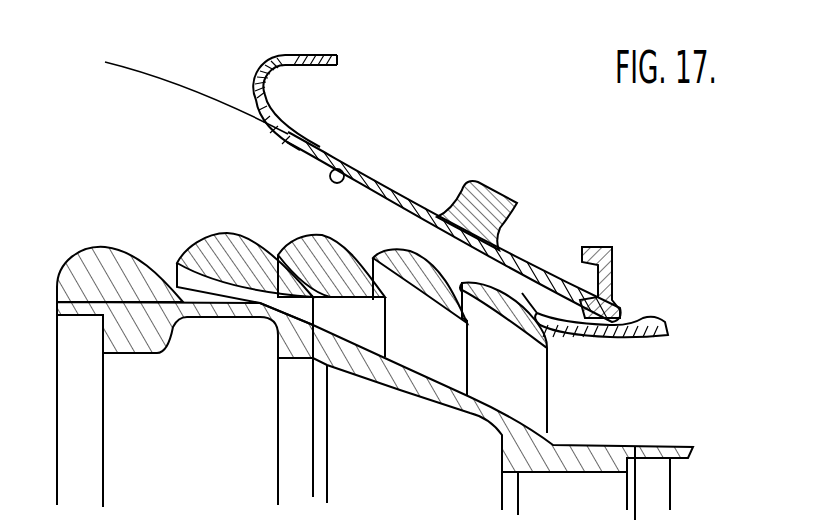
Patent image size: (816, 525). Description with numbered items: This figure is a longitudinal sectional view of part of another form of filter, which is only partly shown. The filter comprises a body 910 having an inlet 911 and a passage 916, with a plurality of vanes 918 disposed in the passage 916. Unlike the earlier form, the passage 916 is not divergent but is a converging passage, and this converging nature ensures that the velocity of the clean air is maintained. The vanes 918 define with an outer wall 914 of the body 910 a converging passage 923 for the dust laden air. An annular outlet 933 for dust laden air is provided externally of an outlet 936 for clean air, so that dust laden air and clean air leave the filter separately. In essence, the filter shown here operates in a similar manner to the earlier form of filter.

The body 910 is at (388, 182).
The inlet 911 is at (150, 102).
The outer wall 914 is at (415, 200).
The passage 916 is at (343, 169).
The vanes 918 is at (240, 268).
The converging passage 923 is at (430, 245).
The annular outlet 933 is at (621, 317).
The outlet 936 is at (627, 390).